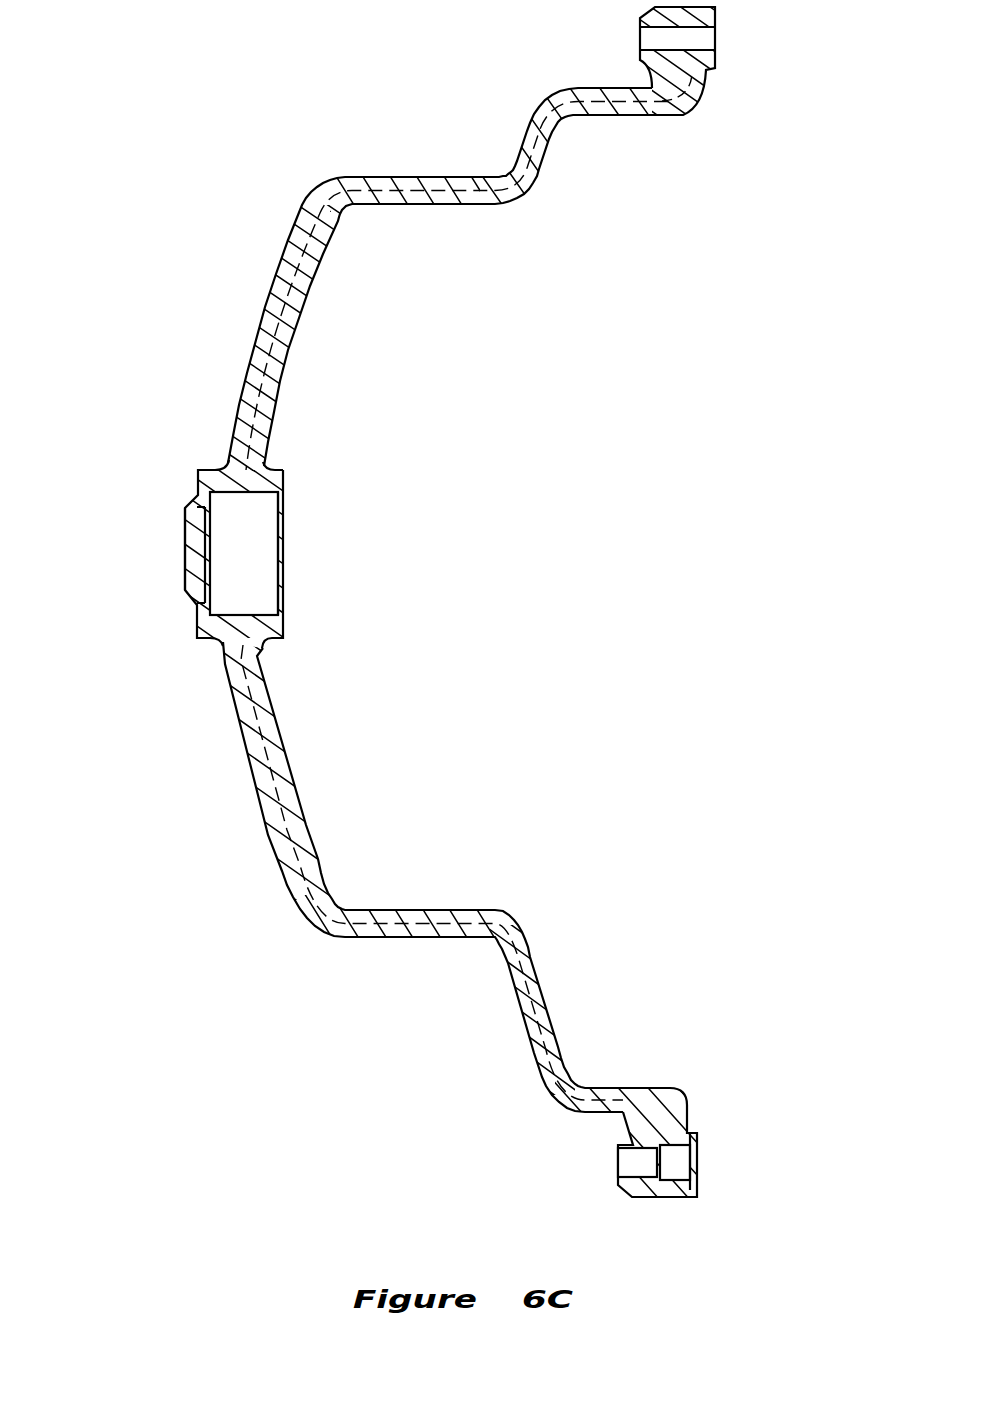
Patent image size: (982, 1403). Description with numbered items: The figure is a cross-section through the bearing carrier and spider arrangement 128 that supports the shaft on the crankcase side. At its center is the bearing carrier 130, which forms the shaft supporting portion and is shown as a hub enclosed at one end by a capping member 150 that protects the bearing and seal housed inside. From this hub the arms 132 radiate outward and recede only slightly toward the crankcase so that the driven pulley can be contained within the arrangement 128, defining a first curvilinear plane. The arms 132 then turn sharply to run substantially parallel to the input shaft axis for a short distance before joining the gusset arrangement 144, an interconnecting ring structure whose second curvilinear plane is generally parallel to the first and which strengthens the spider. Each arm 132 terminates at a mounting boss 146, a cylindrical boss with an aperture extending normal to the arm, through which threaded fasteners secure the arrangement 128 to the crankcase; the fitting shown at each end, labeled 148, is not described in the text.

The bearing carrier and spider arrangement 128 is at (387, 938).
The bearing carrier 130 is at (267, 537).
The arms 132 is at (582, 87).
The gusset arrangement 144 is at (520, 1023).
The mounting boss 146 is at (625, 1130).
The fitting 148 is at (705, 35).
The capping member 150 is at (184, 548).